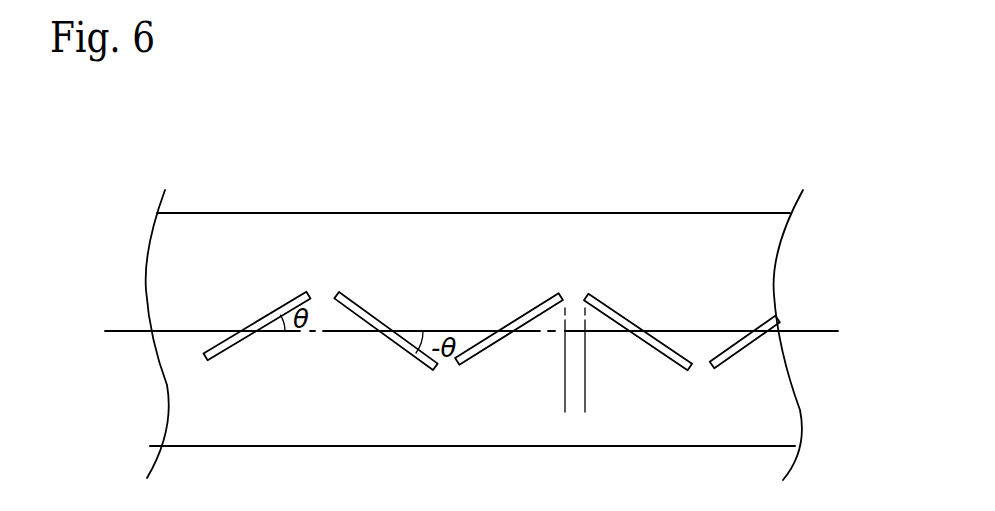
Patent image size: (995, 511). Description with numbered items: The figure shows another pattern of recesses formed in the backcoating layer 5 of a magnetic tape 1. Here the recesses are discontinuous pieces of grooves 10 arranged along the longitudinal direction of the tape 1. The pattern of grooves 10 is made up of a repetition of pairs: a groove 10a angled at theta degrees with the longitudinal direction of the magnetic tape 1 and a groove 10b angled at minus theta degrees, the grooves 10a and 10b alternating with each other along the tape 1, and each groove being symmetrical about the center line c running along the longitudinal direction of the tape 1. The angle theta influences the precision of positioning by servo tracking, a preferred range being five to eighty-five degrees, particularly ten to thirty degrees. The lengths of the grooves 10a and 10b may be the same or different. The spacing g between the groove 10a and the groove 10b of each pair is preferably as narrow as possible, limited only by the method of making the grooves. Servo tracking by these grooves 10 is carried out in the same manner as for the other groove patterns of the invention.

The magnetic tape 1 is at (738, 198).
The backcoating layer 5 is at (203, 267).
The grooves 10 is at (392, 222).
The groove 10a is at (277, 307).
The groove 10b is at (367, 307).
The center line c is at (813, 328).
The spacing g is at (613, 404).